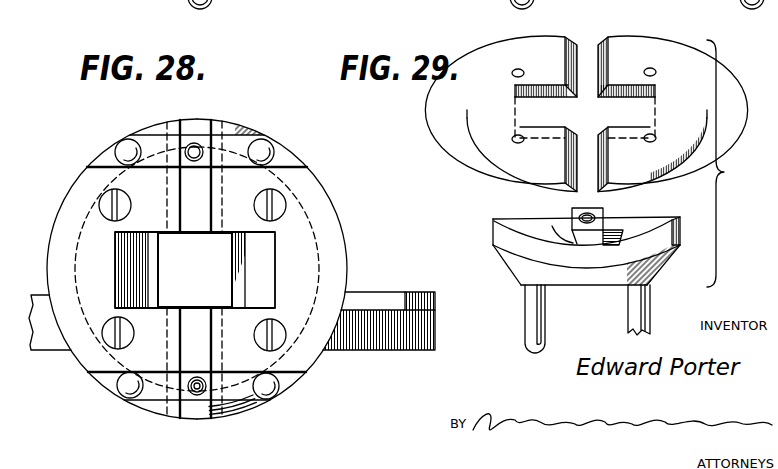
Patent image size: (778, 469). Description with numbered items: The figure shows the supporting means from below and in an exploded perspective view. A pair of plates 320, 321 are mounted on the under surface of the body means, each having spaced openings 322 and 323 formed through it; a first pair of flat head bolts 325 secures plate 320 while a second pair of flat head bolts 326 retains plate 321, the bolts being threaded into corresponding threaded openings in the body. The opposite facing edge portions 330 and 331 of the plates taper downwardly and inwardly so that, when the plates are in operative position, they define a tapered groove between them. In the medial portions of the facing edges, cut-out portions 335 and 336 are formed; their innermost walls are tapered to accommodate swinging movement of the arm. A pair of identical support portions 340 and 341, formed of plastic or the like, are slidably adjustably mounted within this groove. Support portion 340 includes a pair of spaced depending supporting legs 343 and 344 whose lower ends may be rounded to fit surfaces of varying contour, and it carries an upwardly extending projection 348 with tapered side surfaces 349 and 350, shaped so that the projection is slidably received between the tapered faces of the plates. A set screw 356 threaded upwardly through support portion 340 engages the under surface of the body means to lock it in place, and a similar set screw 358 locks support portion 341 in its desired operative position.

In FIG. 28, the plate 320 is at (80, 190).
In FIG. 29, the plate 320 is at (543, 44).
In FIG. 28, the plate 321 is at (335, 232).
In FIG. 29, the plate 321 is at (632, 38).
In FIG. 29, the spaced openings 322 is at (512, 70).
In FIG. 29, the spaced openings 323 is at (654, 70).
In FIG. 28, the flat head bolts 325 is at (137, 189).
In FIG. 28, the flat head bolts 326 is at (280, 218).
In FIG. 29, the facing edge portion 330 is at (572, 43).
In FIG. 29, the facing edge portion 331 is at (595, 90).
In FIG. 28, the cut-out portion 335 is at (152, 236).
In FIG. 29, the cut-out portion 335 is at (547, 90).
In FIG. 28, the cut-out portion 336 is at (238, 238).
In FIG. 29, the cut-out portion 336 is at (602, 92).
In FIG. 28, the support portion 340 is at (236, 121).
In FIG. 29, the support portion 340 is at (581, 296).
In FIG. 28, the support portion 341 is at (250, 402).
In FIG. 28, the supporting leg 343 is at (117, 145).
In FIG. 29, the supporting leg 343 is at (525, 327).
In FIG. 28, the supporting leg 344 is at (273, 146).
In FIG. 29, the supporting leg 344 is at (652, 305).
In FIG. 29, the projection 348 is at (604, 212).
In FIG. 29, the tapered side surface 349 is at (557, 228).
In FIG. 29, the tapered side surface 350 is at (612, 236).
In FIG. 28, the set screw 356 is at (194, 143).
In FIG. 28, the set screw 358 is at (200, 395).